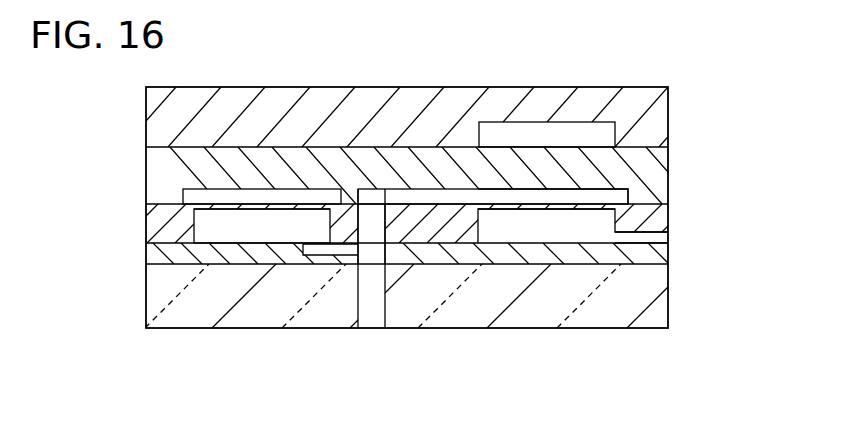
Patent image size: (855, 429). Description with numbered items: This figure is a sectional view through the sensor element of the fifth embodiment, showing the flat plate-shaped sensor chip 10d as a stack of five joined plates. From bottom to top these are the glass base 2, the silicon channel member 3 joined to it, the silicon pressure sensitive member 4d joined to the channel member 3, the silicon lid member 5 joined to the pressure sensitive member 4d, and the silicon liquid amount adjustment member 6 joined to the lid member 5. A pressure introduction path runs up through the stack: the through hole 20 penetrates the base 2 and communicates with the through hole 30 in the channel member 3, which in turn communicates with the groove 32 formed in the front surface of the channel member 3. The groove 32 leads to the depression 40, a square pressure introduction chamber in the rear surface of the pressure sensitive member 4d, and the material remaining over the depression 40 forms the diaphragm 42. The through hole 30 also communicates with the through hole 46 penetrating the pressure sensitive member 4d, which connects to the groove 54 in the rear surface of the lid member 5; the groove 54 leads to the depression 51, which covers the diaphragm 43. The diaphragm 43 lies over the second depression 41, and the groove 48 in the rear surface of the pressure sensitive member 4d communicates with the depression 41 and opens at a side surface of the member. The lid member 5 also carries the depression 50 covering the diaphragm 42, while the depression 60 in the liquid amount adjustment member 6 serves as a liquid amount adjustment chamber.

The sensor chip 10d is at (127, 329).
The liquid amount adjustment member 6 is at (660, 118).
The lid member 5 is at (660, 174).
The pressure sensitive member 4d is at (660, 217).
The channel member 3 is at (660, 255).
The base 2 is at (660, 300).
The depression 60 is at (600, 130).
The depression 50 is at (282, 196).
The groove 54 is at (422, 197).
The depression 51 is at (515, 197).
The diaphragm 42 is at (220, 207).
The diaphragm 43 is at (553, 207).
The depression 40 is at (245, 232).
The depression 41 is at (572, 233).
The groove 48 is at (640, 237).
The groove 32 is at (315, 248).
The through hole 20 is at (370, 318).
The through hole 30 is at (373, 255).
The through hole 46 is at (373, 219).